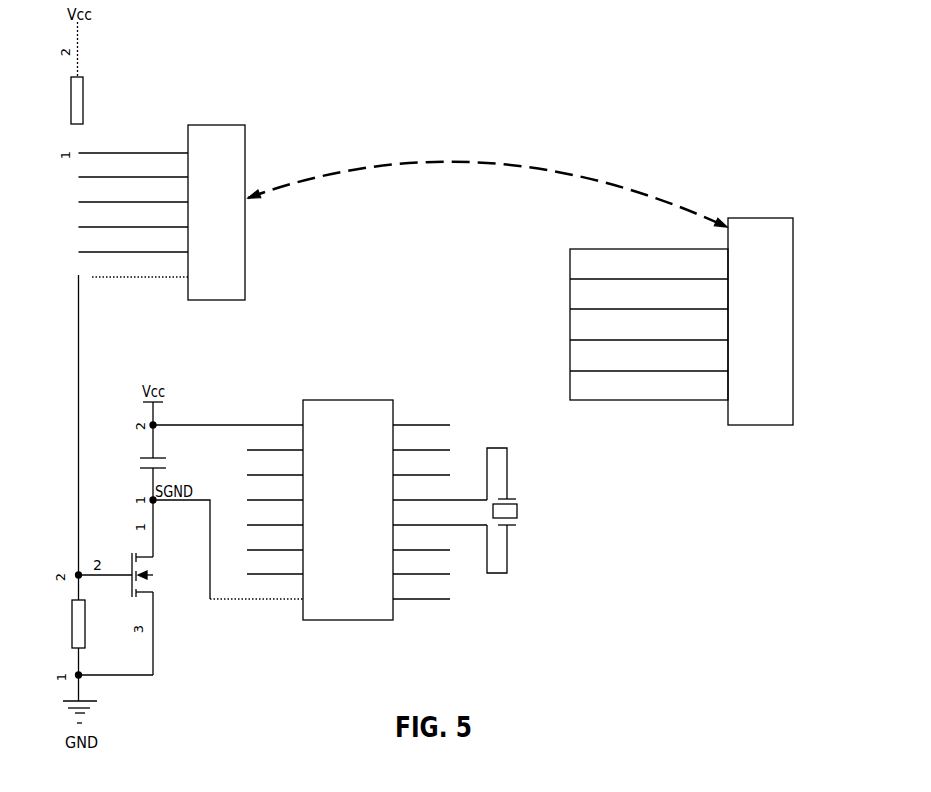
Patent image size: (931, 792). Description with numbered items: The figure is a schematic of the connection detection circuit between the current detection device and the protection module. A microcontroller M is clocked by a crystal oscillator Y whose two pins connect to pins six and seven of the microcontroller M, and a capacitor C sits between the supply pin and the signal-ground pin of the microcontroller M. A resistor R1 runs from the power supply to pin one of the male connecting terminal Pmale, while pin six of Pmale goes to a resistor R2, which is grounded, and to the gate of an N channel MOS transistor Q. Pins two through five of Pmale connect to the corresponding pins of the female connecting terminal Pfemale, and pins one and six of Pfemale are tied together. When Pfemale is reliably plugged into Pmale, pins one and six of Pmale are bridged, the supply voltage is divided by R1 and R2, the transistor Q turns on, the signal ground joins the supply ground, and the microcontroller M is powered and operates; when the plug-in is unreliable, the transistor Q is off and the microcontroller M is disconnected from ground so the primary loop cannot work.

The resistor R1 is at (86, 100).
The resistor R2 is at (87, 624).
The capacitor C is at (161, 463).
The N channel MOS transistor Q is at (152, 575).
The microcontroller M is at (348, 501).
The crystal oscillator Y is at (506, 510).
The connecting terminal (male terminal) Pmale is at (162, 203).
The connecting terminal (female terminal) Pfemale is at (681, 310).